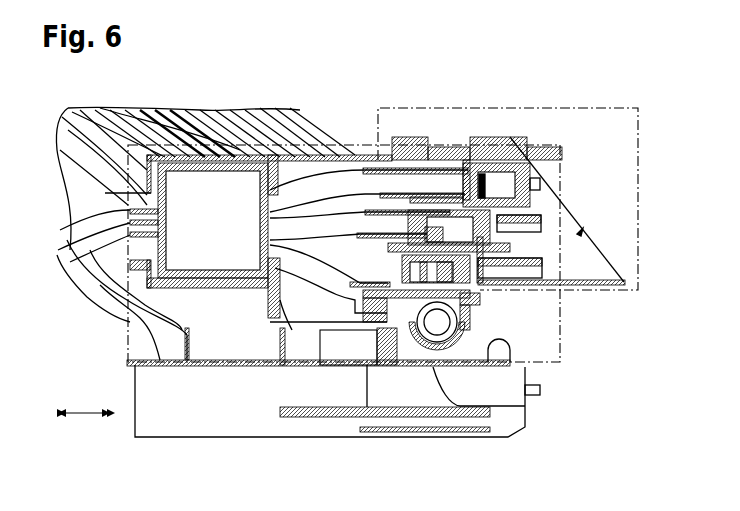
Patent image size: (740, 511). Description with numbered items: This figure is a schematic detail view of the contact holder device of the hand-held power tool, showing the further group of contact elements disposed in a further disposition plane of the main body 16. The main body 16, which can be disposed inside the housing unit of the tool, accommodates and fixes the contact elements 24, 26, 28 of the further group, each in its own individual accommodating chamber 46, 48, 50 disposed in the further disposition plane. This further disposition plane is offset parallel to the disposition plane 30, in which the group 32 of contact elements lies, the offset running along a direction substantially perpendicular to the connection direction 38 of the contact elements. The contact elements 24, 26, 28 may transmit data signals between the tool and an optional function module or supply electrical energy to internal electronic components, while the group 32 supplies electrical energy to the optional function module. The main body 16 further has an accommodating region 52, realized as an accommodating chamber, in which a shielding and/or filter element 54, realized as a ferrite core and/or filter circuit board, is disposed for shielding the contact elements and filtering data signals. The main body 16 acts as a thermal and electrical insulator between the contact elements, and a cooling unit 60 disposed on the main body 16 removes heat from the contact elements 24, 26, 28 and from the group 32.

The main body 16 is at (433, 350).
The contact element 24 is at (501, 182).
The contact element 26 is at (458, 226).
The contact element 28 is at (480, 318).
The disposition plane 30 is at (584, 108).
The group of contact elements 32 is at (548, 363).
The connection direction 38 is at (82, 414).
The individual accommodating chamber 46 is at (478, 179).
The individual accommodating chamber 48 is at (478, 218).
The individual accommodating chamber 50 is at (480, 298).
The accommodating region 52 is at (182, 150).
The shielding and/or filter element 54 is at (221, 200).
The cooling unit 60 is at (577, 234).